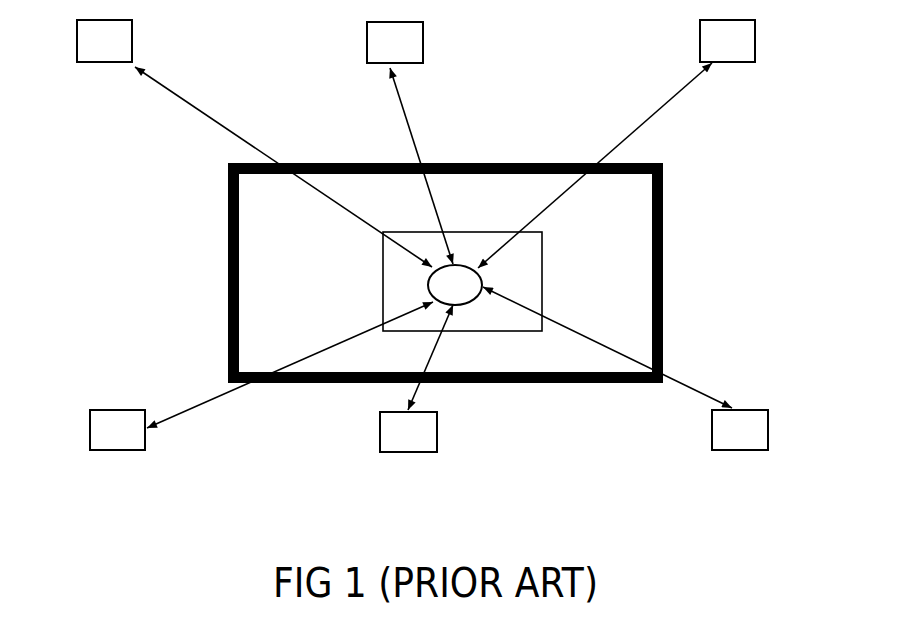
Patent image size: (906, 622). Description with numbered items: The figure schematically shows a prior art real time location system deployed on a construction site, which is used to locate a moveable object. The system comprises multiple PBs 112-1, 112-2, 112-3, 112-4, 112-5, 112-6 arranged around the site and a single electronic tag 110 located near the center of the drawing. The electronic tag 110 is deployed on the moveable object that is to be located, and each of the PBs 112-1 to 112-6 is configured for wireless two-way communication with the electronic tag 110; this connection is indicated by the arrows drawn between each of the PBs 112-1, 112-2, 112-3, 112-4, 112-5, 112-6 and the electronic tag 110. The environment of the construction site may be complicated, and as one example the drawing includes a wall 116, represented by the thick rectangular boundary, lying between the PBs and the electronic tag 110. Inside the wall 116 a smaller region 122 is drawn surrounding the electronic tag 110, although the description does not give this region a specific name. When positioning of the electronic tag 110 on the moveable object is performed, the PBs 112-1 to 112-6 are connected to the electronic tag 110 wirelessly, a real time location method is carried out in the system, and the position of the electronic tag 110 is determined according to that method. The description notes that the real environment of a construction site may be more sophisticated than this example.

The electronic tag 110 is at (481, 310).
The PB 112-1 is at (87, 72).
The PB 112-2 is at (422, 68).
The PB 112-3 is at (755, 82).
The PB 112-4 is at (98, 462).
The PB 112-5 is at (435, 458).
The PB 112-6 is at (768, 472).
The wall 116 is at (218, 278).
The capture region 122 is at (543, 298).